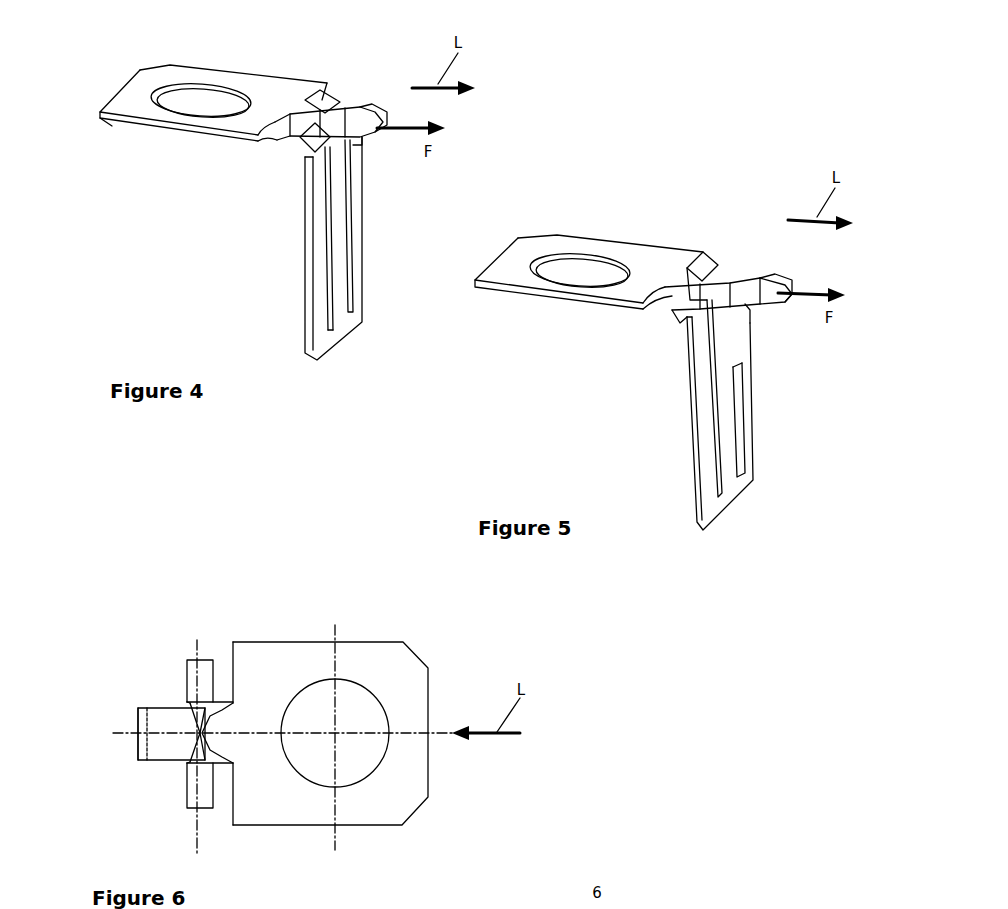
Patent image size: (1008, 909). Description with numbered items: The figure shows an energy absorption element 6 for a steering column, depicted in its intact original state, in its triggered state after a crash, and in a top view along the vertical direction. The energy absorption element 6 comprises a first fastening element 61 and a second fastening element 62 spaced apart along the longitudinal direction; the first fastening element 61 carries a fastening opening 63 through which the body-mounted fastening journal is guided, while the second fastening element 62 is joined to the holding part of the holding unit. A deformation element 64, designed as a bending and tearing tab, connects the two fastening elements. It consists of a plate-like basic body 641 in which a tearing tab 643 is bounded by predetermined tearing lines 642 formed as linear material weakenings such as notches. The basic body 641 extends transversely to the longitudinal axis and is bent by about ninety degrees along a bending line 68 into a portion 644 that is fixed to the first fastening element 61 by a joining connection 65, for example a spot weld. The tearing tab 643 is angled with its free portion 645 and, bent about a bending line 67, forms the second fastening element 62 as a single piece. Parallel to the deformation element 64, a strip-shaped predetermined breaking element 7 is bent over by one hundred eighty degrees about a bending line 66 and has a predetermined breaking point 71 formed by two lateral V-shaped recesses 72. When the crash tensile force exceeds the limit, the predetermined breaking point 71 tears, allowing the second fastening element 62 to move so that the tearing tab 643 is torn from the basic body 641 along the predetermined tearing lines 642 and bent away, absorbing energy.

In FIG. 4, the energy absorption element 6 is at (239, 58).
In FIG. 5, the energy absorption element 6 is at (672, 176).
In FIG. 6, the energy absorption element 6 is at (465, 661).
In FIG. 4, the first fastening element 61 is at (138, 115).
In FIG. 5, the first fastening element 61 is at (493, 282).
In FIG. 6, the first fastening element 61 is at (395, 675).
In FIG. 4, the second fastening element 62 is at (370, 117).
In FIG. 5, the second fastening element 62 is at (763, 297).
In FIG. 6, the second fastening element 62 is at (198, 733).
In FIG. 4, the fastening opening 63 is at (197, 103).
In FIG. 5, the fastening opening 63 is at (563, 275).
In FIG. 6, the fastening opening 63 is at (352, 700).
In FIG. 4, the deformation element 64 is at (308, 287).
In FIG. 5, the deformation element 64 is at (720, 423).
In FIG. 6, the deformation element 64 is at (200, 733).
In FIG. 4, the basic body 641 is at (355, 220).
In FIG. 5, the basic body 641 is at (747, 438).
In FIG. 6, the basic body 641 is at (200, 737).
In FIG. 4, the predetermined tearing lines 642 is at (348, 248).
In FIG. 5, the predetermined tearing lines 642 is at (732, 397).
In FIG. 6, the predetermined tearing lines 642 is at (198, 732).
In FIG. 4, the tearing tab 643 is at (333, 235).
In FIG. 5, the tearing tab 643 is at (733, 367).
In FIG. 4, the angled portion 644 is at (258, 133).
In FIG. 5, the angled portion 644 is at (670, 293).
In FIG. 4, the free portion 645 is at (362, 145).
In FIG. 5, the free portion 645 is at (750, 297).
In FIG. 4, the joining connection 65 is at (327, 97).
In FIG. 5, the joining connection 65 is at (630, 307).
In FIG. 5, the bending line 66 is at (785, 278).
In FIG. 6, the bending line 66 is at (145, 786).
In FIG. 5, the bending line 67 is at (700, 320).
In FIG. 6, the bending line 67 is at (198, 650).
In FIG. 5, the bending line 68 is at (752, 255).
In FIG. 6, the bending line 68 is at (196, 642).
In FIG. 4, the predetermined breaking element 7 is at (290, 148).
In FIG. 6, the predetermined breaking element 7 is at (198, 730).
In FIG. 4, the predetermined breaking point 71 is at (337, 110).
In FIG. 6, the predetermined breaking point 71 is at (198, 735).
In FIG. 6, the V-shaped recesses 72 is at (203, 700).